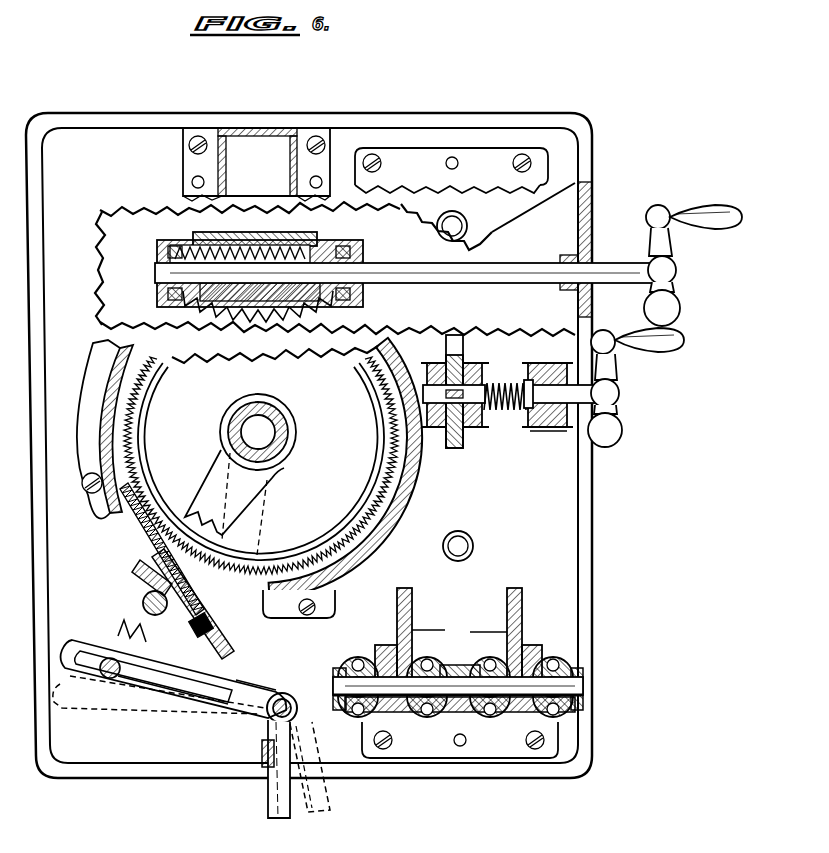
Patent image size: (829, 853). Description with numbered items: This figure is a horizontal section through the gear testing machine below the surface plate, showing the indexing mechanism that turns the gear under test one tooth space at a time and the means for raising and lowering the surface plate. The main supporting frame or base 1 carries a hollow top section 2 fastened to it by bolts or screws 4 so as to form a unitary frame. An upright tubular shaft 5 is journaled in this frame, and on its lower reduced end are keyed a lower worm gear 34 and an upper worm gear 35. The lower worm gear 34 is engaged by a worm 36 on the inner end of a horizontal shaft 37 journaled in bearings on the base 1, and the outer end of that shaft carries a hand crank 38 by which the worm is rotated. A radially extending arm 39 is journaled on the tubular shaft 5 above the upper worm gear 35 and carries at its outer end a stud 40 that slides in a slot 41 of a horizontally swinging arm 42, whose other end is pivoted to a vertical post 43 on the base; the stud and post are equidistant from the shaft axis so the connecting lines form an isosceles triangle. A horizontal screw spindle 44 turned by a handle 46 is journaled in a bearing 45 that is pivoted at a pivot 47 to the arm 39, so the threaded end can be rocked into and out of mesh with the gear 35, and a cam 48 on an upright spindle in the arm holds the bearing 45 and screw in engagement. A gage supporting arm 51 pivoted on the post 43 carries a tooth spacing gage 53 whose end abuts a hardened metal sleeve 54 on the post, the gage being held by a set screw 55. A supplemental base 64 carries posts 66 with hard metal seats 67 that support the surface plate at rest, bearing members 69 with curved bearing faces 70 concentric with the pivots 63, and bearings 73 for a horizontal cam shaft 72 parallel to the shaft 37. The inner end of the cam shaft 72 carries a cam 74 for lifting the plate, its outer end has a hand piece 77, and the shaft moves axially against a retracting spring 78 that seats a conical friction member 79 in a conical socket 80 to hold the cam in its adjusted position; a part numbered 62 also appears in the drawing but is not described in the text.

The main supporting frame or base 1 is at (117, 136).
The hollow top section 2 is at (385, 525).
The bolts or screws 4 is at (88, 490).
The upright tubular shaft 5 is at (290, 432).
The lower worm gear 34 is at (336, 330).
The upper worm gear 35 is at (399, 486).
The worm 36 is at (246, 243).
The horizontal shaft 37 is at (516, 266).
The hand crank 38 is at (668, 216).
The radially extending arm 39 is at (207, 494).
The stud 40 is at (110, 680).
The slot 41 is at (170, 690).
The horizontally swinging arm 42 is at (242, 692).
The vertical post 43 is at (284, 698).
The horizontal screw spindle 44 is at (145, 532).
The bearing 45 is at (245, 516).
The handle 46 is at (196, 630).
The pivot 47 is at (142, 606).
The cam 48 is at (136, 576).
The gage supporting arm 51 is at (312, 796).
The tooth spacing gage 53 is at (283, 819).
The hardened metal sleeve 54 is at (108, 678).
The set screw 55 is at (262, 752).
The bearing block 62 is at (384, 648).
The pivots 63 is at (583, 690).
The supplemental base 64 is at (499, 172).
The posts 66 is at (437, 226).
The hard metal seats 67 is at (449, 223).
The bearing members 69 is at (459, 632).
The curved bearing faces 70 is at (404, 588).
The horizontal cam shaft 72 is at (616, 392).
The bearings 73 is at (432, 372).
The cam 74 is at (455, 448).
The hand piece 77 is at (622, 346).
The retracting spring 78 is at (498, 380).
The conical friction member 79 is at (524, 406).
The conical socket 80 is at (539, 430).